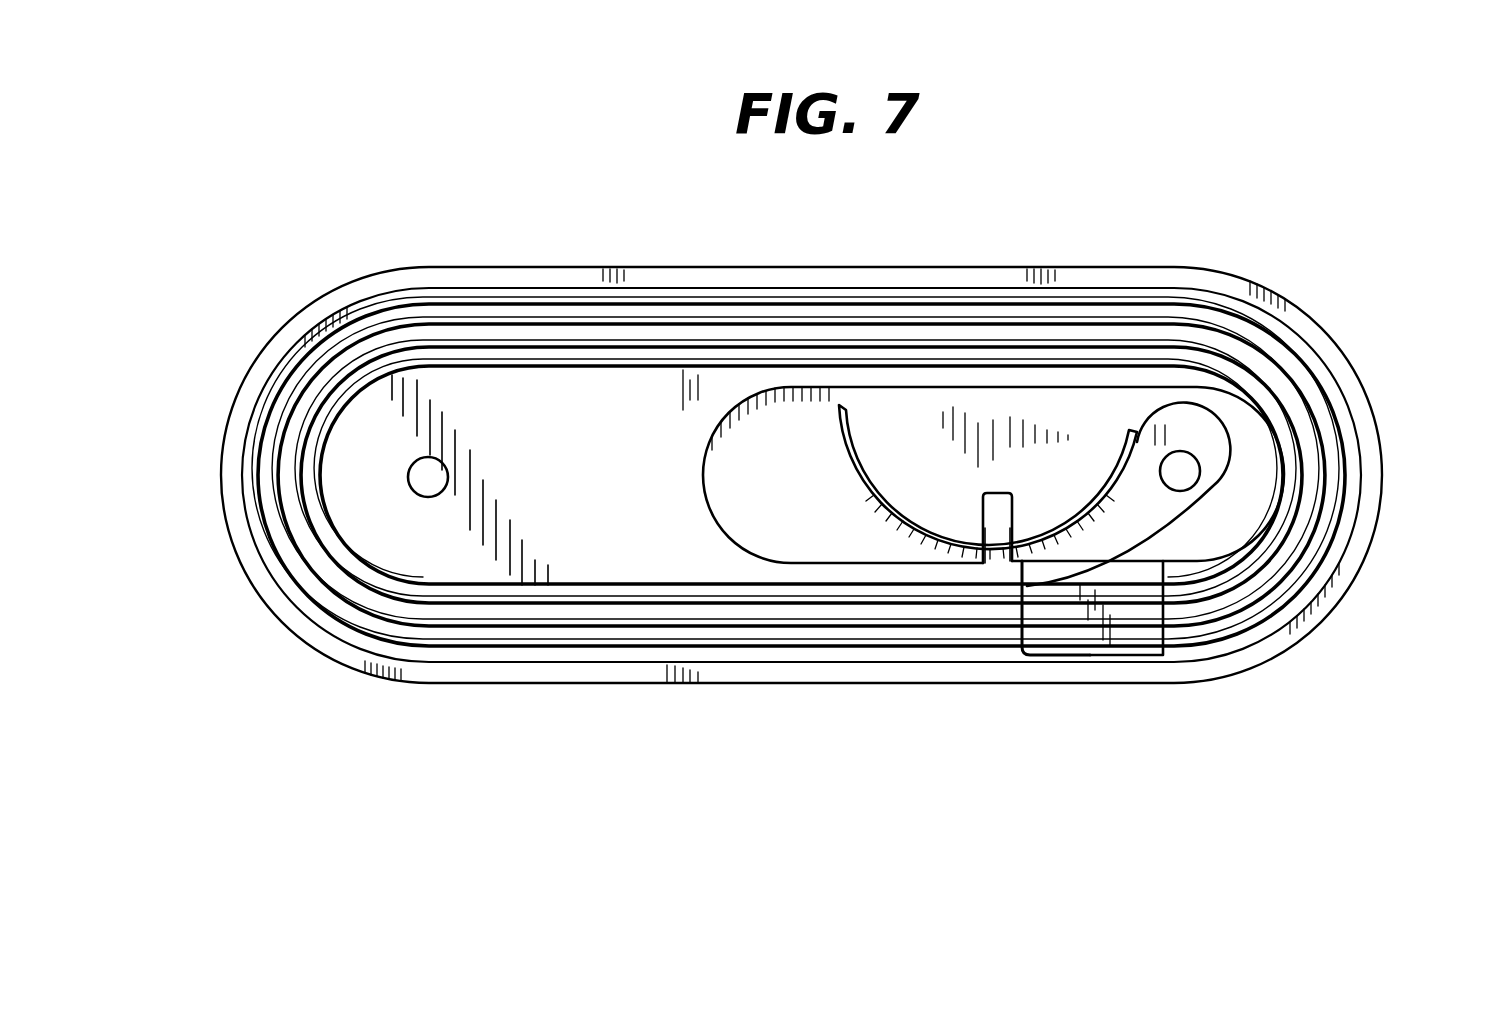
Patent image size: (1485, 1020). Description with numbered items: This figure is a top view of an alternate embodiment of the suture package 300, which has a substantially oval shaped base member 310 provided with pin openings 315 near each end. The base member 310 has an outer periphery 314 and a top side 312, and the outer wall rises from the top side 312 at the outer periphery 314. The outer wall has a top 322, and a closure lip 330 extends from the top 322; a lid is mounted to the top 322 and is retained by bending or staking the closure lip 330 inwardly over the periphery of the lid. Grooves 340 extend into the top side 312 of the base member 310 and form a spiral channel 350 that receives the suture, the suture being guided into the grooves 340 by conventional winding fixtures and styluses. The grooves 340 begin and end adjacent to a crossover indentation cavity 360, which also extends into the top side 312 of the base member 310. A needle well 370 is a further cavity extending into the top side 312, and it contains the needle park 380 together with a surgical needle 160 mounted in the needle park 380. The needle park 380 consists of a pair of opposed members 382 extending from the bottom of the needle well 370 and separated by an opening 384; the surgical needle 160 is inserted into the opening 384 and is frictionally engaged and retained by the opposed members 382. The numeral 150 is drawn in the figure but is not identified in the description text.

The package 300 is at (1322, 248).
The base member 310 is at (609, 443).
The top side 312 is at (588, 566).
The outer periphery 314 is at (1333, 612).
The pin openings 315 is at (445, 478).
The top 322 is at (745, 655).
The closure lip 330 is at (864, 668).
The grooves 340 is at (1317, 373).
The spiral channel 350 is at (568, 645).
The crossover indentation cavity 360 is at (1150, 652).
The needle well 370 is at (704, 497).
The needle park 380 is at (928, 554).
The opposed members 382 is at (1000, 493).
The opening 384 is at (997, 523).
The block 150 is at (1074, 648).
The surgical needle 160 is at (850, 448).